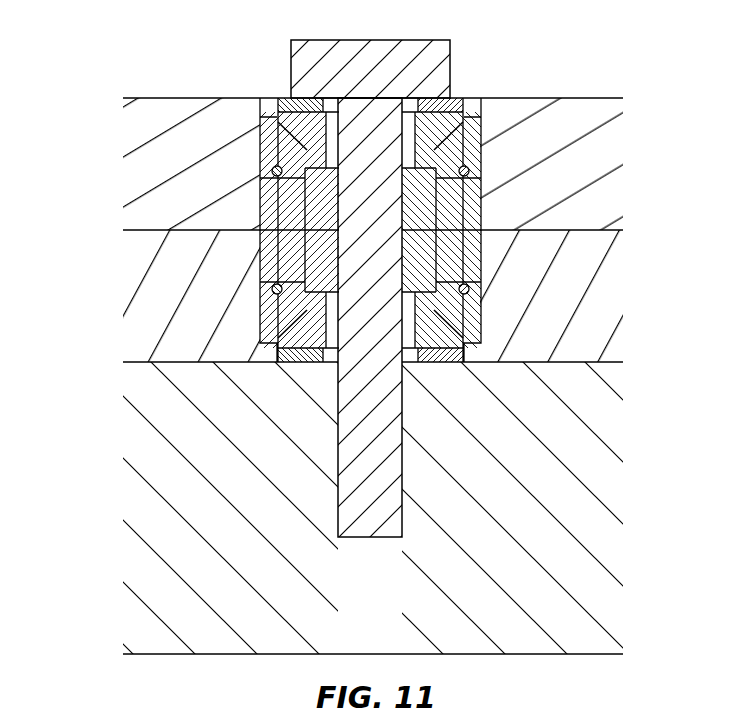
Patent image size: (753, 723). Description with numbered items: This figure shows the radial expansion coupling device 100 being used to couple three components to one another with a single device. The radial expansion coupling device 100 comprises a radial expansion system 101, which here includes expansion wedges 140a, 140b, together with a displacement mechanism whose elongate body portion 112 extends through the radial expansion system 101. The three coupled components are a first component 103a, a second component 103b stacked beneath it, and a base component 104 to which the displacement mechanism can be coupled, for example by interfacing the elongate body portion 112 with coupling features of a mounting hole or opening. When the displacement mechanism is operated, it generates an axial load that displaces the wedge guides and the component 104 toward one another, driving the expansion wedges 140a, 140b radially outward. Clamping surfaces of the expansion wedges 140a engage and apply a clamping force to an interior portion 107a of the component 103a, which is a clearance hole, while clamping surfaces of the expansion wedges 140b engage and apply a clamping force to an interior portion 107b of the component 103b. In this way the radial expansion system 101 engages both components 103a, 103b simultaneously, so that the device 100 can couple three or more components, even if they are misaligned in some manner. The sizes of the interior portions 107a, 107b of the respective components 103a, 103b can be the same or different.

The radial expansion coupling device 100 is at (477, 38).
The radial expansion system 101 is at (494, 127).
The component 103a is at (178, 98).
The component 103b is at (140, 276).
The component 104 is at (214, 655).
The interior portion 107a is at (261, 109).
The interior portion 107b is at (262, 352).
The elongate body portion 112 is at (410, 210).
The expansion wedges 140a is at (265, 203).
The expansion wedges 140b is at (265, 315).